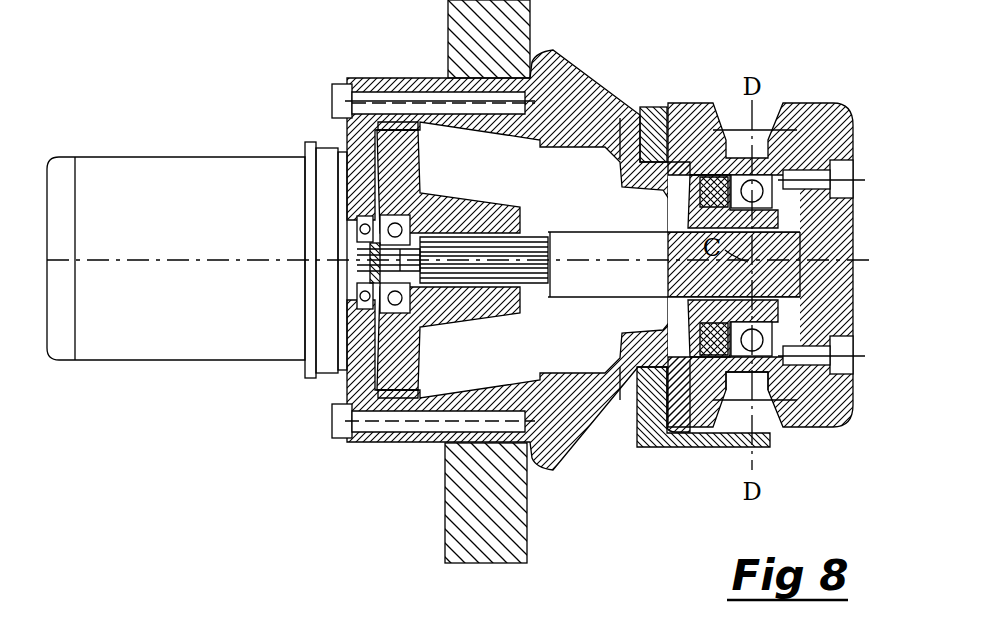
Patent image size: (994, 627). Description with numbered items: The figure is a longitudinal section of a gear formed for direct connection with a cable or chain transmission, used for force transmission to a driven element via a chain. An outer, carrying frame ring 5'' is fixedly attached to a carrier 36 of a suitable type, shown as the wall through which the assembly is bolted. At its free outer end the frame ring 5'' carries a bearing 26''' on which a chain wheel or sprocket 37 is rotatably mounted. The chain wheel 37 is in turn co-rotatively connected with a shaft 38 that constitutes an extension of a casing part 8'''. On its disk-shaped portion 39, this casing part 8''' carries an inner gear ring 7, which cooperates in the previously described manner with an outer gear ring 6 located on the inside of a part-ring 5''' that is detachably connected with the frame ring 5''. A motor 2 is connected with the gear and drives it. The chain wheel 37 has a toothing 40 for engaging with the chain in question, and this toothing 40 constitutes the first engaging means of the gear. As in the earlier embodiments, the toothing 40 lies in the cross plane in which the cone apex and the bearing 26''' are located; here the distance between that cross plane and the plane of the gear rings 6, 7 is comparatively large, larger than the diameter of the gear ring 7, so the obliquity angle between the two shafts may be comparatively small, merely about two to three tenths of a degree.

The motor 2 is at (196, 178).
The part-ring 5''' is at (555, 241).
The frame ring 5'' is at (675, 230).
The outer gear ring 6 is at (403, 128).
The inner gear ring 7 is at (396, 403).
The casing part 8''' is at (428, 292).
The carrier 36 is at (463, 531).
The chain wheel or sprocket 37 is at (830, 122).
The shaft 38 is at (580, 236).
The disk-shaped portion 39 is at (406, 164).
The bearing 26''' is at (813, 267).
The toothing 40 is at (790, 438).